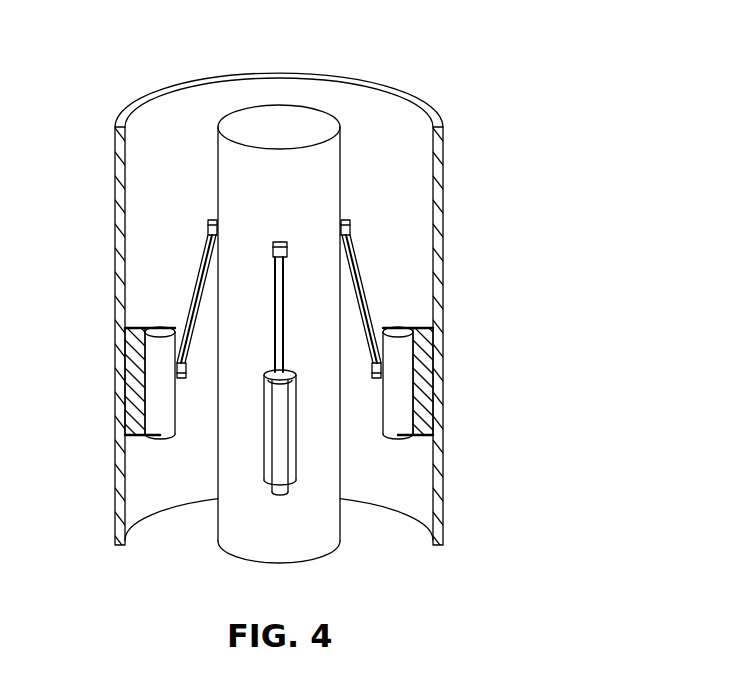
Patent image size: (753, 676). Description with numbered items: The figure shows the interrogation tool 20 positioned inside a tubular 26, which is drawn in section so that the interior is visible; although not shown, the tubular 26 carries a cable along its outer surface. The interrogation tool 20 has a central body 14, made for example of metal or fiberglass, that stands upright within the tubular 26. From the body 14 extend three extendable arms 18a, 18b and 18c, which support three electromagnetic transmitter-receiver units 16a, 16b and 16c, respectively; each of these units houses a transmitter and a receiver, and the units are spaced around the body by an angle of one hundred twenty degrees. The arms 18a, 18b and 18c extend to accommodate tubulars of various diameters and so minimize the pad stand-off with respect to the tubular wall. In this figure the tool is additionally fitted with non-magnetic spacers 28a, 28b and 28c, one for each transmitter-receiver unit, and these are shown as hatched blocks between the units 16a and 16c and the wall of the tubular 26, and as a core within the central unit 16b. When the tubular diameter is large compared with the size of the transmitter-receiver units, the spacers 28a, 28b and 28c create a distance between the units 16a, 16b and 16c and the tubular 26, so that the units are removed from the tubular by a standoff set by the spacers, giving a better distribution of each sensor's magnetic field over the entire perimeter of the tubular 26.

The interrogation tool 20 is at (177, 137).
The tubular 26 is at (444, 145).
The body 14 is at (342, 152).
The spacer 28c is at (133, 412).
The transmitter-receiver unit 16c is at (152, 372).
The extendable arm 18c is at (197, 280).
The spacer 28a is at (433, 415).
The transmitter-receiver unit 16a is at (408, 387).
The extendable arm 18a is at (357, 253).
The extendable arm 18b is at (284, 315).
The transmitter-receiver unit 16b is at (297, 446).
The spacer 28b is at (278, 452).